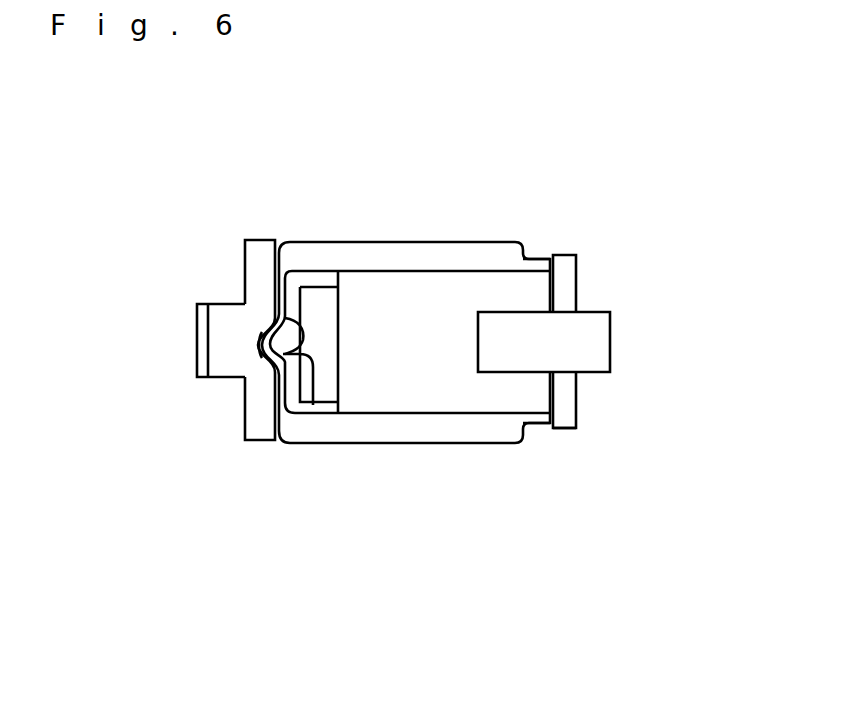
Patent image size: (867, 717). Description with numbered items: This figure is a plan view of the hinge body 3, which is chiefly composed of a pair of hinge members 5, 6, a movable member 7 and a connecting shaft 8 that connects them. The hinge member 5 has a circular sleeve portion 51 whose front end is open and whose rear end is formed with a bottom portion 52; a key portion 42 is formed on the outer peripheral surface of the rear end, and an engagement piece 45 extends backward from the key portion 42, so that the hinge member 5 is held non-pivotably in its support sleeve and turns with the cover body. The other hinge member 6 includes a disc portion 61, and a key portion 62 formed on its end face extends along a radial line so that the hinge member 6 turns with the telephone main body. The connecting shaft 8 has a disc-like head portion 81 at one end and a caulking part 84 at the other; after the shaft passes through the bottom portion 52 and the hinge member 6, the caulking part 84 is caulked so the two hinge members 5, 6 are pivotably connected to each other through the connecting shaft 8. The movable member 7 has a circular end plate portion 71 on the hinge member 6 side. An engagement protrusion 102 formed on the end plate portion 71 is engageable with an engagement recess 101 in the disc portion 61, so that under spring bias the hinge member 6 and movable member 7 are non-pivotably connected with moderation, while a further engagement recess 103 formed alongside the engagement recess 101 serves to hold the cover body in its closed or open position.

The hinge body 3 is at (462, 231).
The hinge member 5 is at (489, 429).
The hinge member 6 is at (196, 363).
The movable member 7 is at (370, 443).
The connecting shaft 8 is at (589, 278).
The key portion 42 is at (520, 353).
The engagement piece 45 is at (598, 325).
The circular sleeve portion 51 is at (440, 388).
The bottom portion 52 is at (537, 258).
The disc portion 61 is at (258, 240).
The key portion 62 is at (228, 302).
The end plate portion 71 is at (290, 302).
The head portion 81 is at (578, 398).
The caulking part 84 is at (197, 345).
The engagement recess 101 is at (268, 340).
The engagement protrusion 102 is at (265, 355).
The engagement recess 103 is at (320, 287).